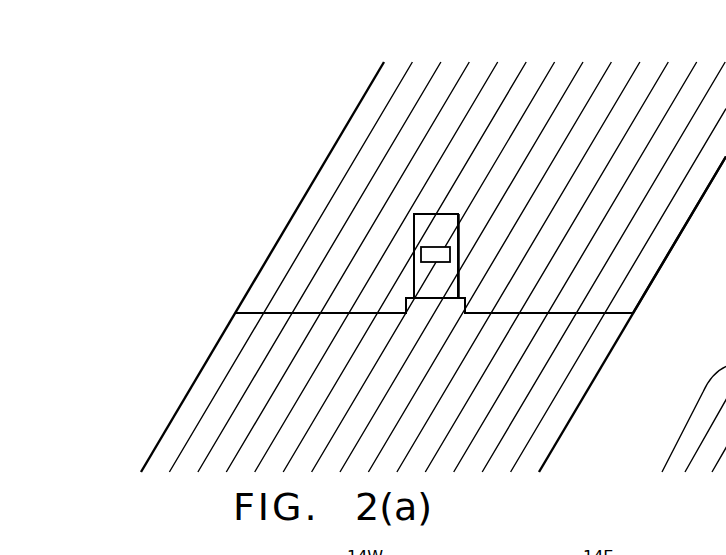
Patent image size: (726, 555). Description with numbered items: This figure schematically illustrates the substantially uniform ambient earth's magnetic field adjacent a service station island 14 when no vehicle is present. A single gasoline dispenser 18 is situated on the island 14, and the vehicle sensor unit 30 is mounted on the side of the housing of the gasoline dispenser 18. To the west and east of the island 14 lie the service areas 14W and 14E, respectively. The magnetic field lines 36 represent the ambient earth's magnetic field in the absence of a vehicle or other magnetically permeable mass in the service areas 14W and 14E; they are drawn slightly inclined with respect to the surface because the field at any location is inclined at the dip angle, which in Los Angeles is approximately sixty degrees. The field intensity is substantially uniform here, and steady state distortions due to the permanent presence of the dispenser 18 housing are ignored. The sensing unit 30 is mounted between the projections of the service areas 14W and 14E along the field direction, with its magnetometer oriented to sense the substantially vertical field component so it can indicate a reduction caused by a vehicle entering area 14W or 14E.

The west service area 14W is at (297, 200).
The east service area 14E is at (646, 302).
The island 14 is at (465, 296).
The gasoline dispenser 18 is at (452, 210).
The vehicle sensor unit 30 is at (451, 250).
The magnetic field lines 36 is at (691, 210).